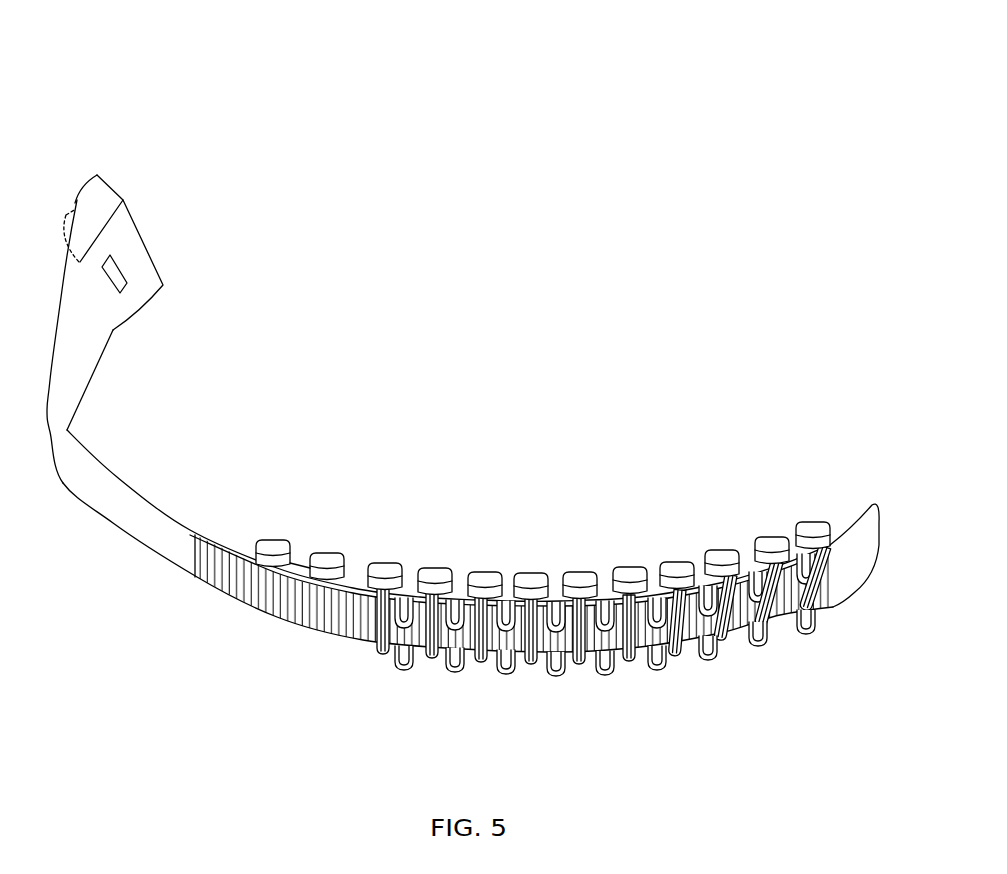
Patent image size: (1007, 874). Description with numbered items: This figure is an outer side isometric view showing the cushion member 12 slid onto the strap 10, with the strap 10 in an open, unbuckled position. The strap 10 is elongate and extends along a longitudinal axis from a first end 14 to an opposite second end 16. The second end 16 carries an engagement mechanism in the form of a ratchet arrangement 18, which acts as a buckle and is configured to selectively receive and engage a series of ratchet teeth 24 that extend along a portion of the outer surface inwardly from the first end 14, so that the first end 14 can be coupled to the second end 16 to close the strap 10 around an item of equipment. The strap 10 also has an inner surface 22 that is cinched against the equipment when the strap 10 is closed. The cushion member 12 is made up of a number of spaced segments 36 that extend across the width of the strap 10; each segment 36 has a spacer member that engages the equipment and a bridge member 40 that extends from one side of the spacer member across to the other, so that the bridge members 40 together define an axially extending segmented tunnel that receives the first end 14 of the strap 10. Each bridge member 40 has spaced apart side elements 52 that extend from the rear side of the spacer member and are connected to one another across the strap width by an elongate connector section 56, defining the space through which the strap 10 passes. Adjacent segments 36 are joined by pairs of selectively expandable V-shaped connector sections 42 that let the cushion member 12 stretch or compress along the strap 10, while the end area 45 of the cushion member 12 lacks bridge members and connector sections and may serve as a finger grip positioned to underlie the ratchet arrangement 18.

The strap 10 is at (585, 113).
The cushion member 12 is at (448, 593).
The first end 14 is at (858, 506).
The second end 16 is at (161, 203).
The ratchet arrangement 18 is at (107, 176).
The inner surface 22 is at (80, 333).
The ratchet teeth 24 is at (242, 583).
The segments 36 is at (440, 558).
The bridge member 40 is at (665, 648).
The V-shaped connector sections 42 is at (812, 625).
The end area 45 is at (298, 558).
The side elements 52 is at (687, 603).
The elongate connector section 56 is at (623, 592).